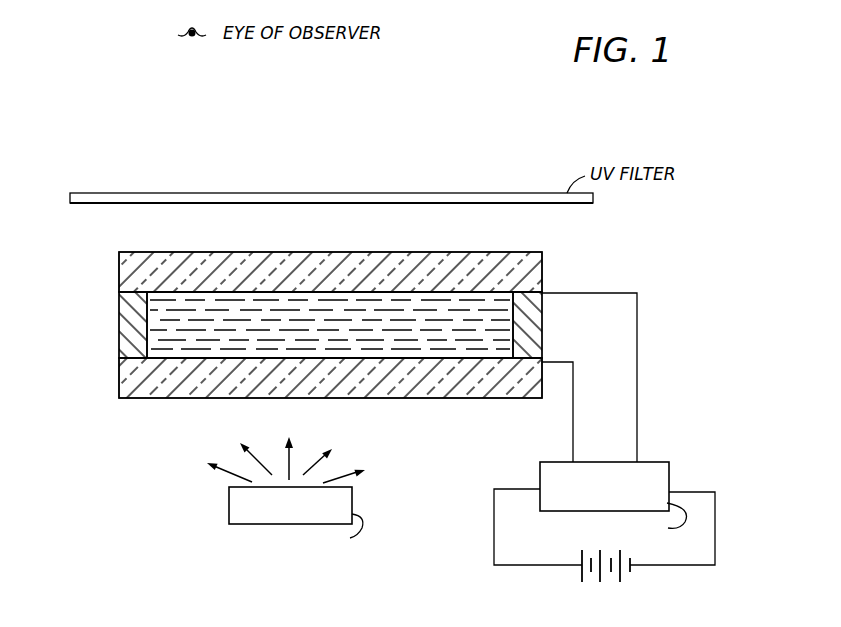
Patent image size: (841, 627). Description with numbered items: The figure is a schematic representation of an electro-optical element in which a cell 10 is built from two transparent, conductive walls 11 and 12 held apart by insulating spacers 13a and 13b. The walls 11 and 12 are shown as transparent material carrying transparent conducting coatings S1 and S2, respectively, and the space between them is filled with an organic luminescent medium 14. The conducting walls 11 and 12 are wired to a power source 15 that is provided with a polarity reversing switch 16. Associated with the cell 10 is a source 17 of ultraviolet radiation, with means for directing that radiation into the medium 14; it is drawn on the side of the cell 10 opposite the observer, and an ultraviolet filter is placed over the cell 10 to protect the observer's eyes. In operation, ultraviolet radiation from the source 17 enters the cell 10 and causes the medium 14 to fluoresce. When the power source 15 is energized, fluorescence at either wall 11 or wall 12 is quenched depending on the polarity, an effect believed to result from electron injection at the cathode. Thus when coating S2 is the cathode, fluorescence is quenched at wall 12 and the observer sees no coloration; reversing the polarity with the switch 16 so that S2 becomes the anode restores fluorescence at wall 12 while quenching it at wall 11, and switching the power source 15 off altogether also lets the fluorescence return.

The cell 10 is at (57, 248).
The transparent conductive wall 11 is at (542, 259).
The transparent conductive wall 12 is at (456, 388).
The insulating spacer 13a is at (128, 326).
The insulating spacer 13b is at (527, 325).
The organic luminescent medium 14 is at (177, 350).
The power source 15 is at (724, 519).
The polarity reversing switch 16 is at (638, 472).
The source of ultraviolet radiation 17 is at (337, 500).
The transparent conducting coating S1 is at (427, 294).
The transparent conducting coating S2 is at (452, 357).